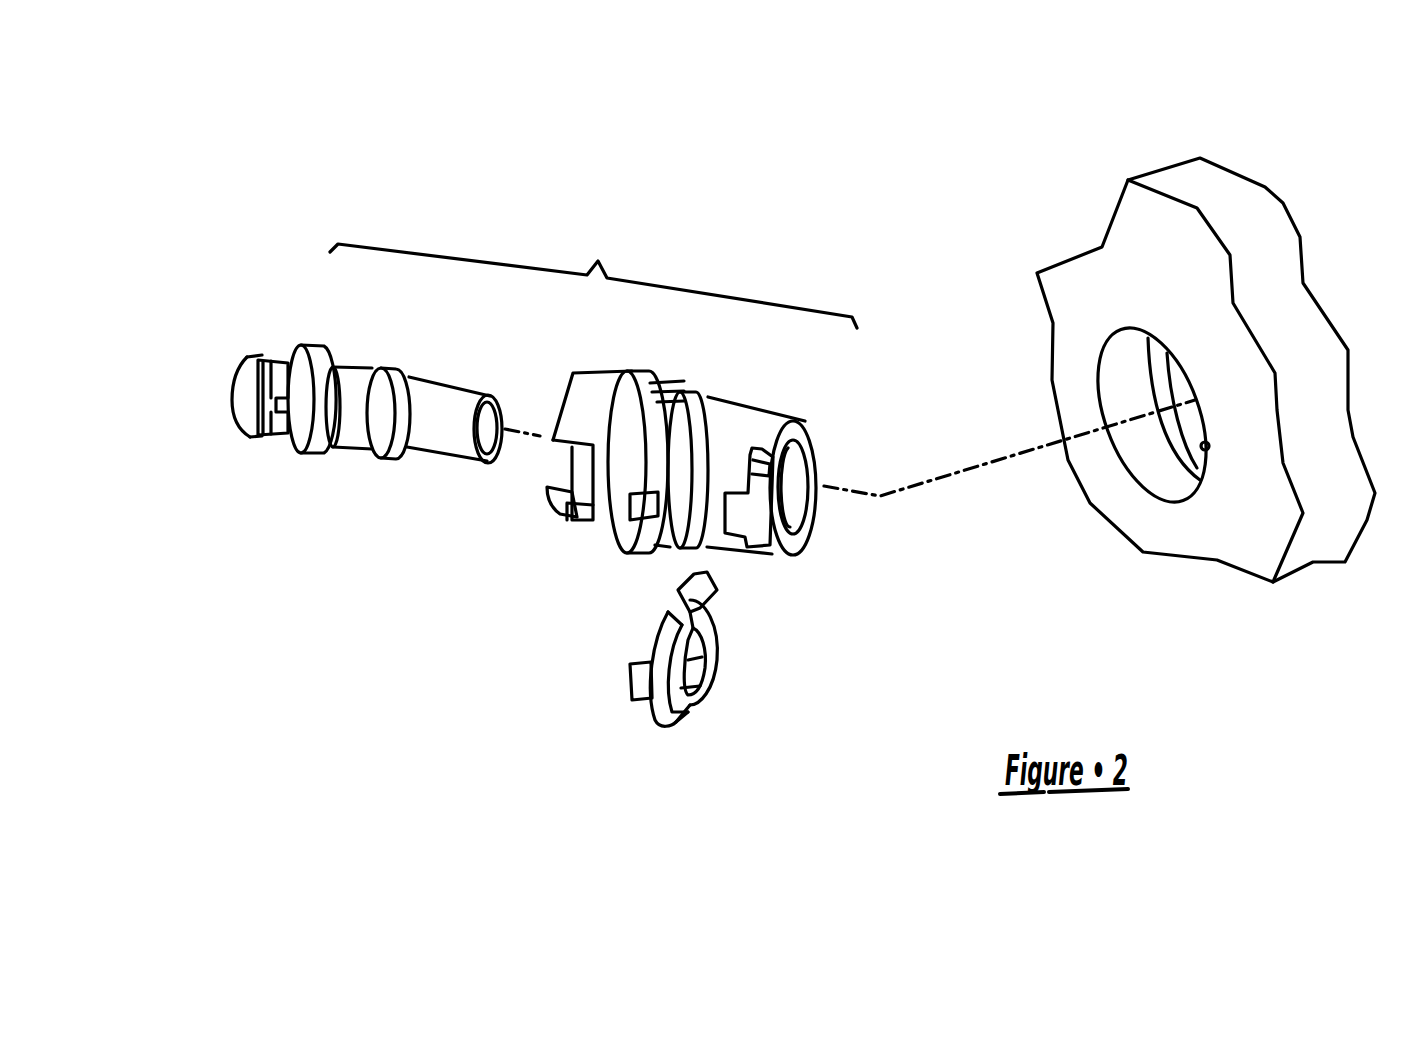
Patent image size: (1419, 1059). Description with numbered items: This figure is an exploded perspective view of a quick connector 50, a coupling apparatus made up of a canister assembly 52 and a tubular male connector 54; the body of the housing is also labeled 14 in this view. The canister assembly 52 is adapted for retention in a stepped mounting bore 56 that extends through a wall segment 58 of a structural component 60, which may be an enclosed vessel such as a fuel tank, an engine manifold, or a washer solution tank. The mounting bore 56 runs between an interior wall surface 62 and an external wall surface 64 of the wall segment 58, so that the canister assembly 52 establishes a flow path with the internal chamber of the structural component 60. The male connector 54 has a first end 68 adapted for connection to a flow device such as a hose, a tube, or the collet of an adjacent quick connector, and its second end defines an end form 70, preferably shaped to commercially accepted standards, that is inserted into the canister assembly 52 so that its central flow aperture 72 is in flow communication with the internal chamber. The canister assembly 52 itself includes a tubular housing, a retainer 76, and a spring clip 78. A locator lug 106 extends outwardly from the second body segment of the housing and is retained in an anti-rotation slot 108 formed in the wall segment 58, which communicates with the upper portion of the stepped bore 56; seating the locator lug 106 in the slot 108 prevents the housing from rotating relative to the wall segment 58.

The connector body 14 is at (673, 479).
The quick connector 50 is at (593, 275).
The canister assembly 52 is at (536, 653).
The tubular male connector 54 is at (334, 447).
The stepped mounting bore 56 is at (1167, 468).
The wall segment 58 is at (1224, 370).
The structural component 60 is at (1255, 572).
The interior wall surface 62 is at (1283, 203).
The external wall surface 64 is at (1104, 197).
The first end 68 is at (240, 422).
The end form 70 is at (430, 390).
The central flow aperture 72 is at (487, 458).
The retainer 76 is at (578, 522).
The spring clip 78 is at (668, 732).
The locator lug 106 is at (653, 543).
The anti-rotation slot 108 is at (1207, 444).